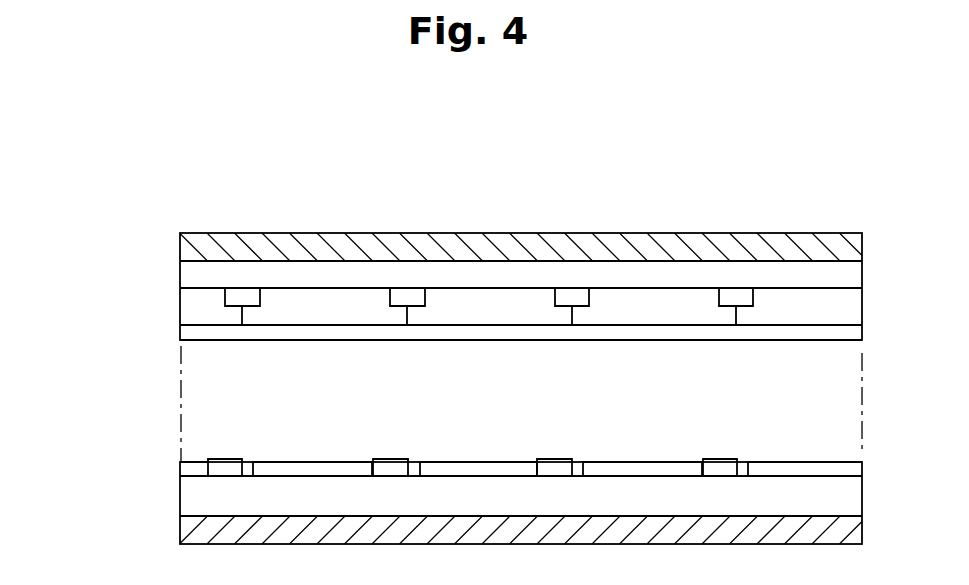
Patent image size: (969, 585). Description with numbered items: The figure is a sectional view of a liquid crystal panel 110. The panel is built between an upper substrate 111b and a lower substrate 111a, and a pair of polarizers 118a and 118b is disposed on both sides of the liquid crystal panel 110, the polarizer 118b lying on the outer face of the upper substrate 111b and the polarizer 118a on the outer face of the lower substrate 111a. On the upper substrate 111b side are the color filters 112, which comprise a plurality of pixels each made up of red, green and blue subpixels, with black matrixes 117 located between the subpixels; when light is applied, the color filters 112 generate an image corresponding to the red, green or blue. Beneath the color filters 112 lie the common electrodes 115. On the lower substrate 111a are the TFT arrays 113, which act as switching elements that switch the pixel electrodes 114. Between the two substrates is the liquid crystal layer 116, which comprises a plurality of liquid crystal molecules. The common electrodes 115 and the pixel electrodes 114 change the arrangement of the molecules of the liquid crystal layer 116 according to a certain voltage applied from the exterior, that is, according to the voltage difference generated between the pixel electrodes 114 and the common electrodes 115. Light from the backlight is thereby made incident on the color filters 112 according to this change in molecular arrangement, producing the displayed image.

The liquid crystal panel 110 is at (676, 206).
The lower substrate 111a is at (190, 492).
The upper substrate 111b is at (387, 270).
The color filters 112 is at (298, 296).
The TFT arrays 113 is at (225, 462).
The pixel electrodes 114 is at (297, 463).
The common electrodes 115 is at (268, 335).
The liquid crystal layer 116 is at (186, 383).
The black matrixes 117 is at (575, 296).
The polarizer 118a is at (190, 530).
The polarizer 118b is at (237, 247).